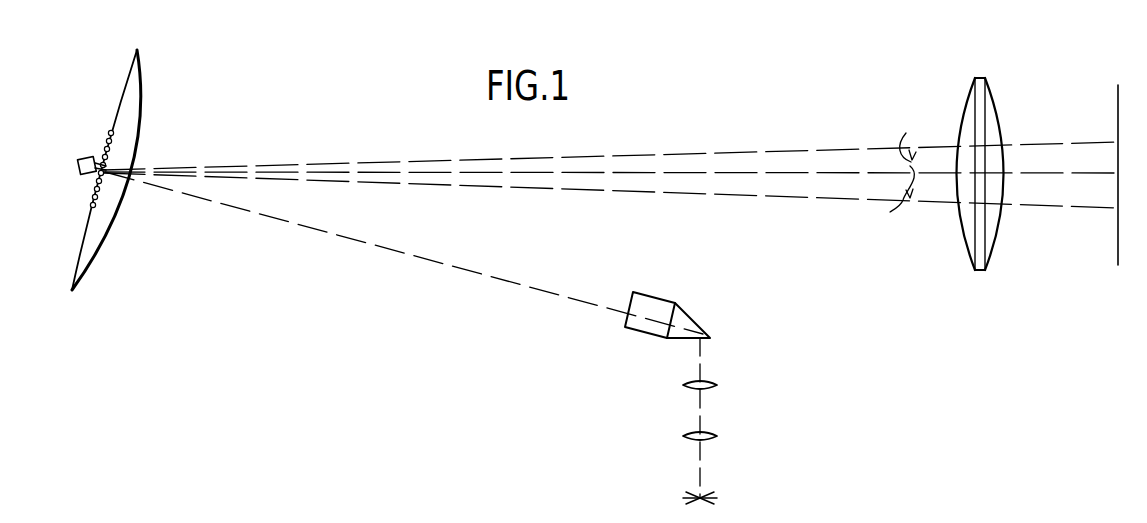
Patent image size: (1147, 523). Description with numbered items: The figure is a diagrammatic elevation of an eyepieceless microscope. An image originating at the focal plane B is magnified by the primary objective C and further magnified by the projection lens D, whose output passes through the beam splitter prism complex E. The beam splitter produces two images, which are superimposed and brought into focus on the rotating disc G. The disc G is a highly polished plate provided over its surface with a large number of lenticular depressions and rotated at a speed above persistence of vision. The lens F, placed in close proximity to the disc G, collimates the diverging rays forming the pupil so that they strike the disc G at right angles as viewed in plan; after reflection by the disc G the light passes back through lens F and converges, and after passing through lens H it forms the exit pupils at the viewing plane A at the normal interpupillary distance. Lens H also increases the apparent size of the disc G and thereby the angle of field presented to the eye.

The lens F is at (133, 123).
The rotating disc G is at (125, 93).
The lens H is at (998, 125).
The viewing plane A is at (1106, 177).
The beam splitter prism complex E is at (674, 315).
The projection lens D is at (710, 384).
The primary objective C is at (710, 436).
The focal plane B is at (709, 494).